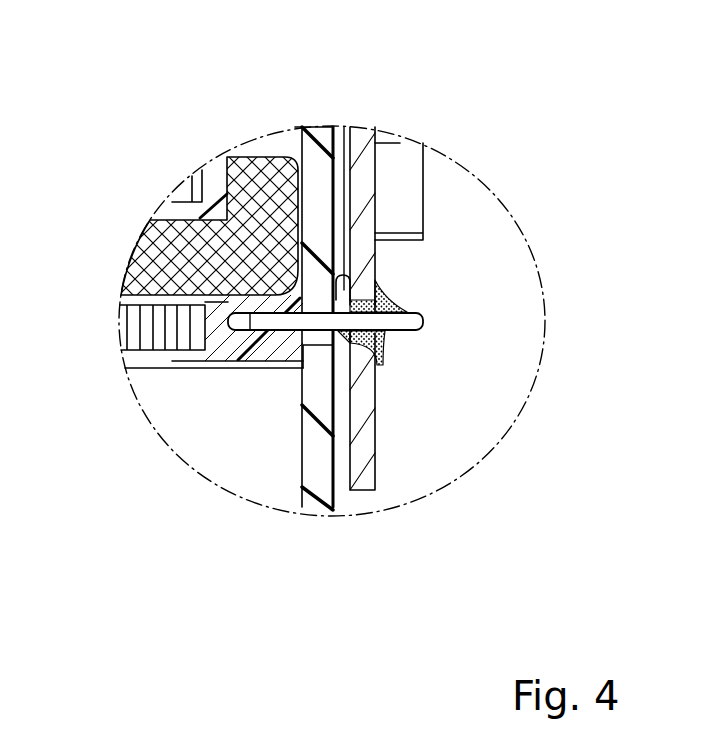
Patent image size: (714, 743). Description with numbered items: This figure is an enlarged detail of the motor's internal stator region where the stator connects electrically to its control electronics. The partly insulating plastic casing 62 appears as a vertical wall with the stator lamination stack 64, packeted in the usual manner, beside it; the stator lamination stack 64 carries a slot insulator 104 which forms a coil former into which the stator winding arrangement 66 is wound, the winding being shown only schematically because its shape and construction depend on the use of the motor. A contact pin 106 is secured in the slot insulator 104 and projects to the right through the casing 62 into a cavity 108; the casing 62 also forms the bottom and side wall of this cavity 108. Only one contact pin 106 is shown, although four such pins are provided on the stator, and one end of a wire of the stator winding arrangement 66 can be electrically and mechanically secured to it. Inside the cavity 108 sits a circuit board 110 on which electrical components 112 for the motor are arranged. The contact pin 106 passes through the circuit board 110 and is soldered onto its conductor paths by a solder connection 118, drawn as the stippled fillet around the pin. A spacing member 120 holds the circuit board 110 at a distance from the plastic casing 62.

The casing 62 is at (281, 145).
The stator lamination stack 64 is at (187, 193).
The stator winding arrangement 66 is at (148, 258).
The slot insulator 104 is at (258, 345).
The contact pin 106 is at (421, 316).
The cavity 108 is at (462, 413).
The circuit board 110 is at (365, 466).
The electrical components 112 is at (408, 202).
The solder connection 118 is at (390, 343).
The spacing member 120 is at (345, 275).